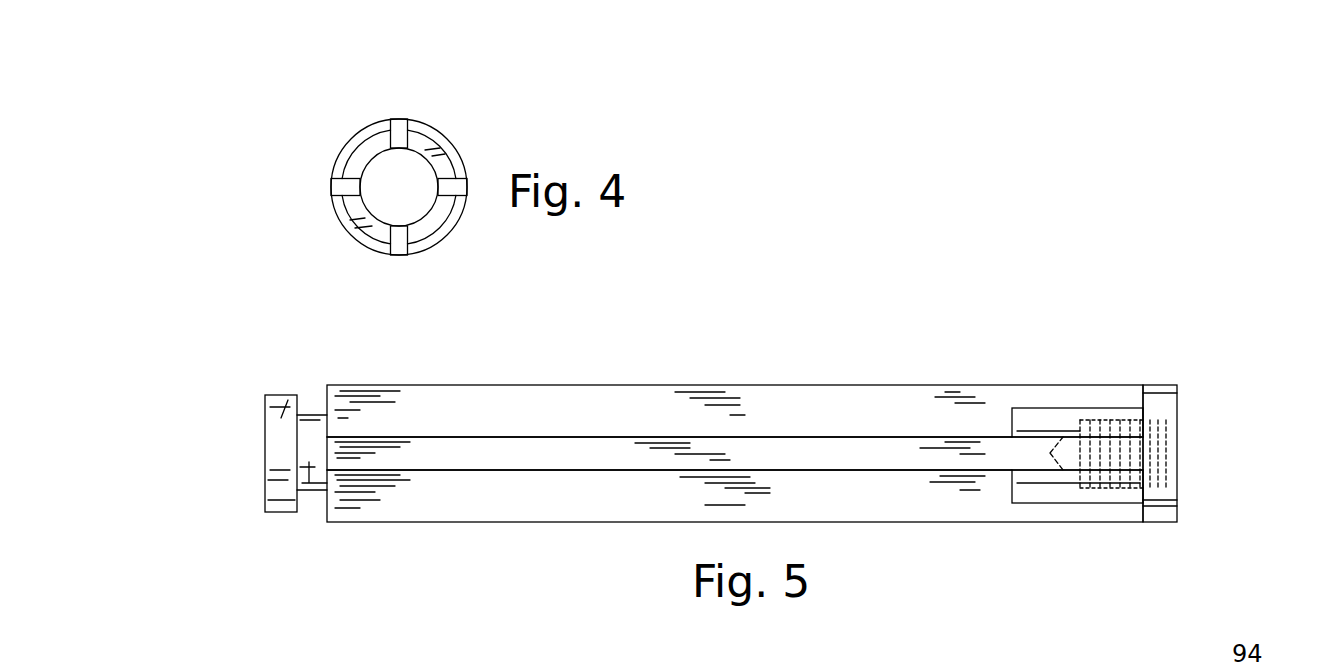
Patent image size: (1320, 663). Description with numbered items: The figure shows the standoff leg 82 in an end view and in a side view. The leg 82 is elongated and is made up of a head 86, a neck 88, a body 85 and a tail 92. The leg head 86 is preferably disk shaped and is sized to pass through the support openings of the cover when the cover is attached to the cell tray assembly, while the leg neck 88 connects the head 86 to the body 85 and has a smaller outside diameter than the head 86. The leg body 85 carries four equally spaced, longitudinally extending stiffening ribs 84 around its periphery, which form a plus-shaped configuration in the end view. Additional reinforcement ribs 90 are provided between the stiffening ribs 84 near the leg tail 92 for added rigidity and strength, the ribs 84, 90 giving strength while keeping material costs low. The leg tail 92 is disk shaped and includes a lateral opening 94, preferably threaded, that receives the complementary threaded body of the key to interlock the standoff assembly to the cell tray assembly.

In FIG. 4, the leg 82 is at (419, 112).
In FIG. 5, the leg 82 is at (823, 380).
In FIG. 4, the stiffening ribs 84 is at (398, 122).
In FIG. 5, the stiffening ribs 84 is at (427, 448).
In FIG. 5, the leg body 85 is at (835, 496).
In FIG. 4, the leg head 86 is at (383, 177).
In FIG. 5, the leg head 86 is at (282, 420).
In FIG. 5, the leg neck 88 is at (308, 462).
In FIG. 4, the reinforcement ribs 90 is at (432, 148).
In FIG. 5, the reinforcement ribs 90 is at (1033, 417).
In FIG. 4, the leg tail 92 is at (343, 227).
In FIG. 5, the leg tail 92 is at (1163, 508).
In FIG. 5, the lateral opening 94 is at (1173, 450).